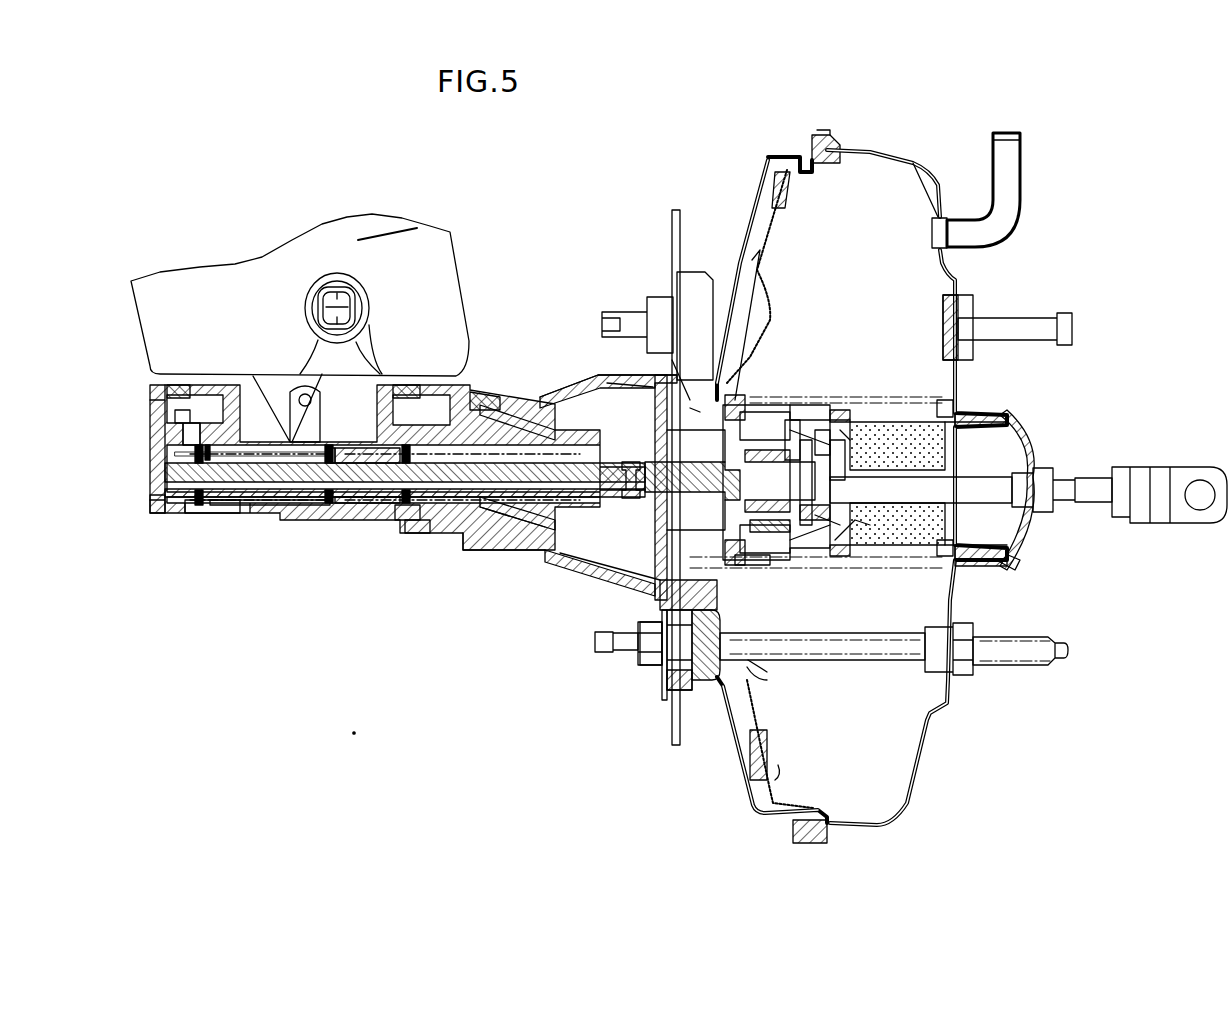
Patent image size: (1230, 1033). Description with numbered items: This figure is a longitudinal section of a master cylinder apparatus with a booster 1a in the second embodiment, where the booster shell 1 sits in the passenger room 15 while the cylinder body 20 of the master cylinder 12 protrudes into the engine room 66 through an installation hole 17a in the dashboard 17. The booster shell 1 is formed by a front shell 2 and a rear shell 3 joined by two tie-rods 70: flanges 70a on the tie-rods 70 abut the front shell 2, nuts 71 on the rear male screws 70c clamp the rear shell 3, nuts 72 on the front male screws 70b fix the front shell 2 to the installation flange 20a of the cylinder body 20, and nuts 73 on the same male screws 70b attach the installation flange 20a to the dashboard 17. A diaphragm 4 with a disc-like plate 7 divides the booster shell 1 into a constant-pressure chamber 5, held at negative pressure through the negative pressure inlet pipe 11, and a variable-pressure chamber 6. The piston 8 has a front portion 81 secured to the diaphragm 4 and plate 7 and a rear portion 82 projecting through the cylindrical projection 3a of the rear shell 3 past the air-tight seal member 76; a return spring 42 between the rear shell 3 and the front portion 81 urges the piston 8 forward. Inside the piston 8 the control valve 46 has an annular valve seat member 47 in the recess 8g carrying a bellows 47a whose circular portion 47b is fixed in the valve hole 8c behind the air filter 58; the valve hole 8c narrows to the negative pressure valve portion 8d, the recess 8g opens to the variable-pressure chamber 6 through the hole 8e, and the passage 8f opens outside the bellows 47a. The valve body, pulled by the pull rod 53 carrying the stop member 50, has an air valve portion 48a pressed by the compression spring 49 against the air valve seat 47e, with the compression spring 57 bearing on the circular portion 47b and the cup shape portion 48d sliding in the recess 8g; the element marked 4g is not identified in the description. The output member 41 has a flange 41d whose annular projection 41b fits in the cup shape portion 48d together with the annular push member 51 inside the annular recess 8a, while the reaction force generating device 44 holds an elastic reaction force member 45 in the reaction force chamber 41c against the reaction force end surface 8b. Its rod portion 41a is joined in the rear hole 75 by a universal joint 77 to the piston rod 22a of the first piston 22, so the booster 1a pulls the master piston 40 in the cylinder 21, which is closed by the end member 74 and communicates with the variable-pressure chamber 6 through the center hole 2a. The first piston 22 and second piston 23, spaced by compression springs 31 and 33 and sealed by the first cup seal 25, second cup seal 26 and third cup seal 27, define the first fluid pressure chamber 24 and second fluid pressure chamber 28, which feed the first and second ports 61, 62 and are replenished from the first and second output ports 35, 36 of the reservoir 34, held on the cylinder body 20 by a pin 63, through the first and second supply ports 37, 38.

The booster shell 1 is at (886, 130).
The booster 1a is at (760, 141).
The front shell 2 is at (755, 205).
The center hole 2a is at (625, 395).
The rear shell 3 is at (920, 175).
The cylindrical projection 3a is at (975, 415).
The diaphragm 4 is at (812, 150).
The valve seat 4g is at (848, 432).
The constant-pressure chamber 5 is at (852, 150).
The variable-pressure chamber 6 is at (750, 252).
The plate 7 is at (775, 180).
The piston 8 is at (770, 405).
The annular recess 8a is at (623, 400).
The reaction force end surface 8b is at (710, 330).
The valve hole 8c is at (855, 412).
The negative pressure valve portion 8d is at (820, 540).
The hole 8e is at (689, 364).
The passage 8f is at (840, 420).
The recess 8g is at (810, 405).
The negative pressure inlet pipe 11 is at (1022, 190).
The master cylinder 12 is at (246, 528).
The passenger room 15 is at (1146, 630).
The dashboard 17 is at (660, 745).
The installation hole 17a is at (640, 630).
The cylinder body 20 is at (360, 503).
The installation flange 20a is at (664, 700).
The cylinder 21 is at (228, 512).
The first piston 22 is at (190, 468).
The piston rod 22a is at (482, 555).
The second piston 23 is at (348, 500).
The first fluid pressure chamber 24 is at (268, 500).
The first cup seal 25 is at (200, 505).
The second cup seal 26 is at (332, 400).
The third cup seal 27 is at (425, 520).
The second fluid pressure chamber 28 is at (490, 410).
The compression spring 31 is at (208, 505).
The compression spring 33 is at (530, 420).
The reservoir 34 is at (458, 283).
The first output port 35 is at (168, 393).
The second output port 36 is at (429, 378).
The first supply port 37 is at (178, 418).
The second supply port 38 is at (405, 505).
The master piston 40 is at (160, 505).
The output member 41 is at (650, 555).
The rod portion 41a is at (575, 560).
The annular projection 41b is at (748, 565).
The reaction force chamber 41c is at (738, 395).
The flange 41d is at (760, 412).
The return spring 42 is at (945, 402).
The reaction force generating device 44 is at (790, 420).
The reaction force member 45 is at (660, 592).
The control valve 46 is at (808, 440).
The valve seat member 47 is at (800, 450).
The bellows 47a is at (822, 530).
The circular portion 47b is at (840, 535).
The air valve seat 47e is at (835, 440).
The air valve portion 48a is at (820, 430).
The cup shape portion 48d is at (700, 412).
The compression spring 49 is at (772, 540).
The stop member 50 is at (1028, 515).
The annular push member 51 is at (620, 575).
The pull rod 53 is at (980, 480).
The compression spring 57 is at (855, 530).
The air filter 58 is at (1015, 565).
The first port 61 is at (312, 505).
The second port 62 is at (448, 535).
The pin 63 is at (302, 393).
The engine room 66 is at (426, 707).
The tie-rods 70 is at (835, 662).
The flanges 70a is at (715, 682).
The male screws 70b is at (605, 654).
The male screws 70c is at (1030, 665).
The nuts 71 is at (965, 676).
The nuts 72 is at (688, 692).
The nuts 73 is at (648, 668).
The end member 74 is at (530, 530).
The rear hole 75 is at (590, 410).
The air-tight seal member 76 is at (985, 566).
The universal joint 77 is at (630, 462).
The front portion 81 is at (760, 680).
The rear portion 82 is at (915, 548).